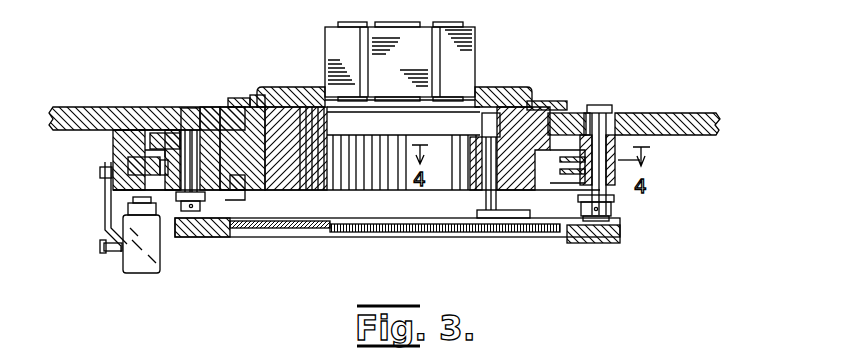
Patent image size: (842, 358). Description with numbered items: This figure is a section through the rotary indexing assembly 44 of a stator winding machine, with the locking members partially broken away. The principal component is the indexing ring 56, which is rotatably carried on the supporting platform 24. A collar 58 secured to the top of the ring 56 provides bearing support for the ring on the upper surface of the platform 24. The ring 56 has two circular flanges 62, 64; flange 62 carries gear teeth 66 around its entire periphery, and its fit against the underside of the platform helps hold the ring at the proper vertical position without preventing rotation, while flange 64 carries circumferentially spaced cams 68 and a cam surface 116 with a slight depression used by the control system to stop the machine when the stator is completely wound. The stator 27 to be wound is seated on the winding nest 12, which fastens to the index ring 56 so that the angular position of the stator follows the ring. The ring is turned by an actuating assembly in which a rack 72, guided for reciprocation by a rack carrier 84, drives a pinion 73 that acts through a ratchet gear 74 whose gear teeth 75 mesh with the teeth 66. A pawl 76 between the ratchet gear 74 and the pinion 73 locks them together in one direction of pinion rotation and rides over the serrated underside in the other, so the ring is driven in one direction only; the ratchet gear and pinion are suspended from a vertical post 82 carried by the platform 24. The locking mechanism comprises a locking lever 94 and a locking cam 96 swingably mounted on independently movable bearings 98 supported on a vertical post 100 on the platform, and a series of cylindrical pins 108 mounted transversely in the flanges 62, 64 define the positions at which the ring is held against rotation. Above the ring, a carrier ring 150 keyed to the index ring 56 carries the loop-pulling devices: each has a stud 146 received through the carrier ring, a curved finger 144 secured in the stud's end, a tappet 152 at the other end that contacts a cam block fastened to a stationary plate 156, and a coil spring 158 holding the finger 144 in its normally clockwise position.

The winding nest 12 is at (510, 93).
The supporting platform 24 is at (683, 113).
The stator 27 is at (327, 32).
The rotary indexing assembly 44 is at (302, 215).
The indexing ring 56 is at (549, 107).
The collar 58 is at (562, 114).
The circular flange 62 is at (247, 125).
The circular flange 64 is at (228, 192).
The gear teeth 66 is at (598, 105).
The cams 68 is at (575, 190).
The rack 72 is at (138, 160).
The pinion 73 is at (148, 192).
The ratchet gear 74 is at (160, 140).
The gear teeth 75 is at (236, 105).
The pawl 76 is at (222, 130).
The vertical post 82 is at (190, 107).
The rack carrier 84 is at (113, 148).
The locking lever 94 is at (613, 168).
The locking cam 96 is at (642, 160).
The bearings 98 is at (608, 140).
The vertical post 100 is at (608, 115).
The cylindrical pins 108 is at (252, 190).
The cam surface 116 is at (191, 212).
The curved finger 144 is at (480, 122).
The stud 146 is at (484, 193).
The carrier ring 150 is at (500, 87).
The tappet 152 is at (516, 232).
The stationary plate 156 is at (522, 233).
The coil spring 158 is at (480, 218).